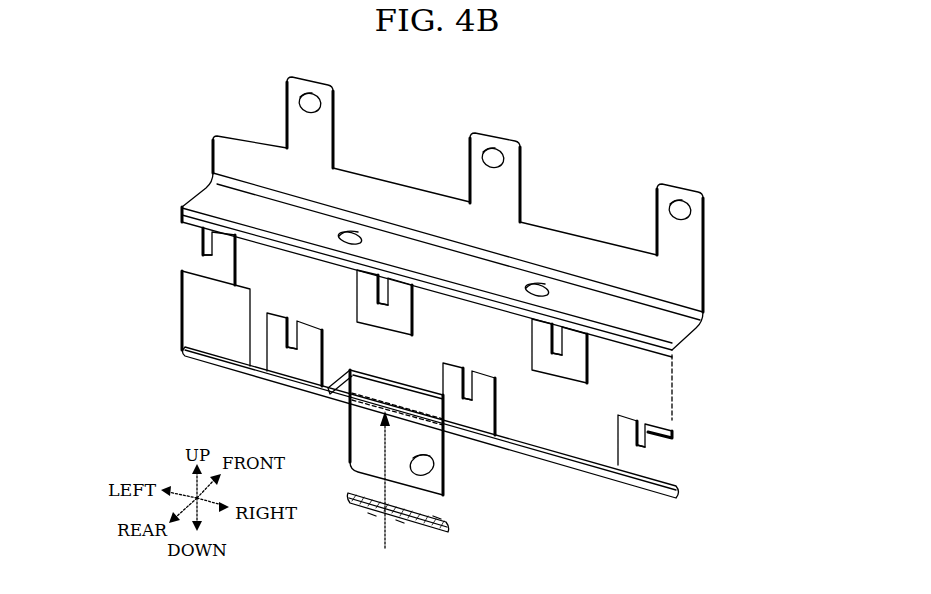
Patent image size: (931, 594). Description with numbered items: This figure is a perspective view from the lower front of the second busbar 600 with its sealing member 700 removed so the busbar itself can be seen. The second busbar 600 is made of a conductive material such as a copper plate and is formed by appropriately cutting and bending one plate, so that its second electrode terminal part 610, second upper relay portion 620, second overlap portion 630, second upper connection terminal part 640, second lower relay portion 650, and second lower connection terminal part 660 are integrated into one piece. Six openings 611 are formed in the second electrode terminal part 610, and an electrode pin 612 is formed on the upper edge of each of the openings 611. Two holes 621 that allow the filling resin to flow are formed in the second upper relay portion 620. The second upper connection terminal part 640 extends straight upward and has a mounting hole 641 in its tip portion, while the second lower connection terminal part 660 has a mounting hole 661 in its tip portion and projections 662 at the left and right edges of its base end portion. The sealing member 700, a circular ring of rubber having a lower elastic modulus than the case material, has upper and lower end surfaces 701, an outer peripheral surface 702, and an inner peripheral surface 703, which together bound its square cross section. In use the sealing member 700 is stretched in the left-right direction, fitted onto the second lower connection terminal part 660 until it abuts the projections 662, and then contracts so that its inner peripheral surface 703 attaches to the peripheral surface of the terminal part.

The second busbar 600 is at (442, 297).
The second electrode terminal part 610 is at (193, 310).
The openings 611 is at (210, 285).
The electrode pin 612 is at (217, 242).
The second upper relay portion 620 is at (682, 335).
The holes 621 is at (363, 244).
The second overlap portion 630 is at (690, 286).
The second upper connection terminal part 640 is at (336, 102).
The mounting hole 641 is at (288, 88).
The second lower relay portion 650 is at (573, 468).
The second lower connection terminal part 660 is at (348, 442).
The mounting hole 661 is at (434, 460).
The projections 662 is at (347, 402).
The sealing member 700 is at (452, 525).
The end surfaces 701 is at (400, 523).
The outer peripheral surface 702 is at (437, 518).
The inner peripheral surface 703 is at (372, 515).